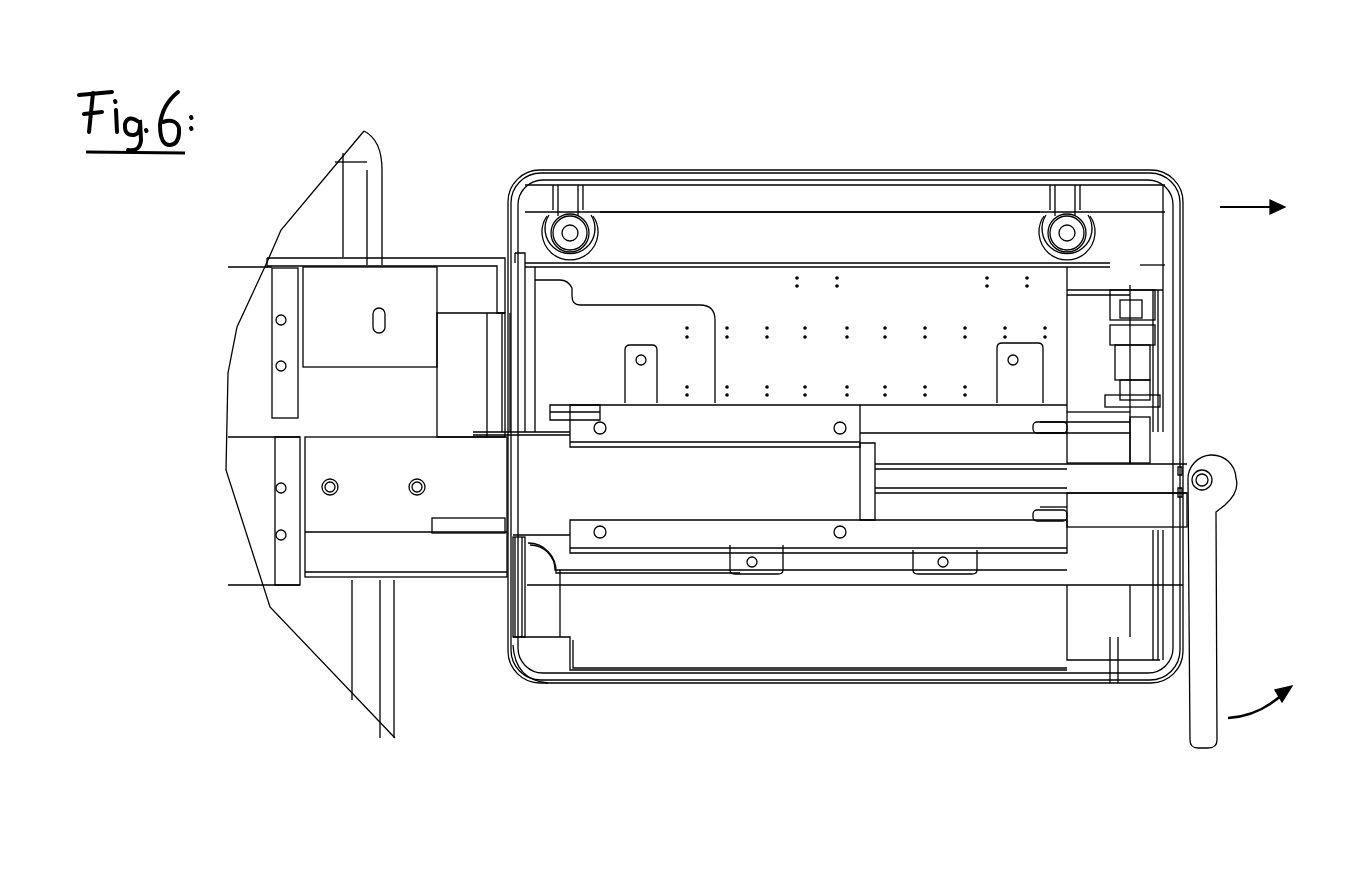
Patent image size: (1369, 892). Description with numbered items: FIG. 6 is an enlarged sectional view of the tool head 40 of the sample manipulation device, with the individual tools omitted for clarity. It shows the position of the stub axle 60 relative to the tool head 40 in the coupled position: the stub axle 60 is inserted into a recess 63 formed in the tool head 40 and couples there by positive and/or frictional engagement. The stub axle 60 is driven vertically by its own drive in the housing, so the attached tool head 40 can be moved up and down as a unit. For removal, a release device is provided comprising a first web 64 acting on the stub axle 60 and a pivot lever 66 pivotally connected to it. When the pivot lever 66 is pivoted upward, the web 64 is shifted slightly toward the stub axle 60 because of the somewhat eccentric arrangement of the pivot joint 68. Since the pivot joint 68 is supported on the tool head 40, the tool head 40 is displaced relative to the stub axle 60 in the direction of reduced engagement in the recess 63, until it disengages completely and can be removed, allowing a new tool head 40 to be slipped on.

The tool head 40 is at (1175, 180).
The stub axle 60 is at (532, 492).
The recess 63 is at (707, 445).
The first web 64 is at (1098, 482).
The pivot lever 66 is at (1205, 628).
The pivot joint 68 is at (1208, 478).